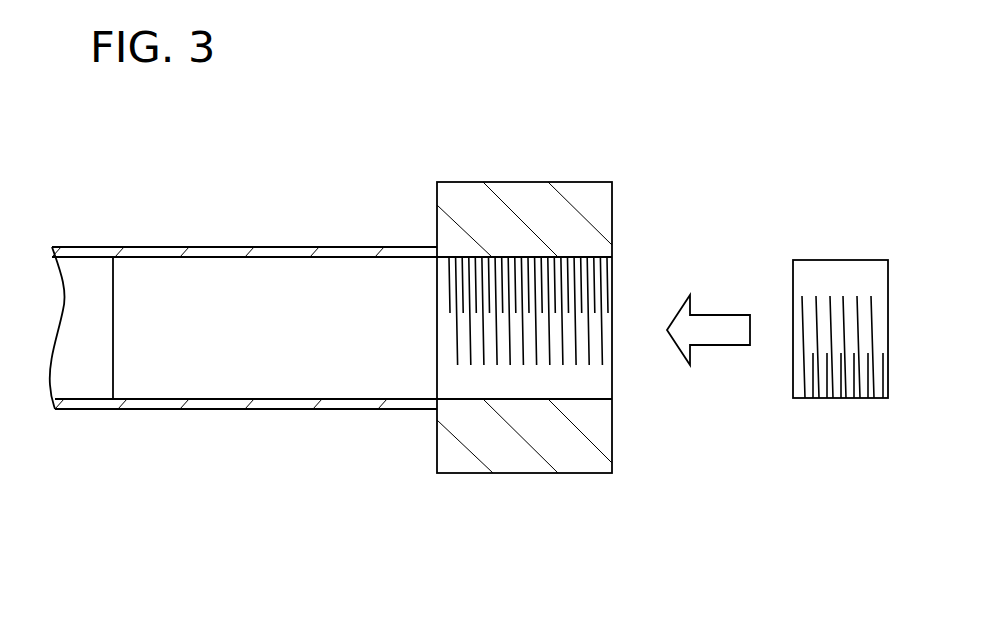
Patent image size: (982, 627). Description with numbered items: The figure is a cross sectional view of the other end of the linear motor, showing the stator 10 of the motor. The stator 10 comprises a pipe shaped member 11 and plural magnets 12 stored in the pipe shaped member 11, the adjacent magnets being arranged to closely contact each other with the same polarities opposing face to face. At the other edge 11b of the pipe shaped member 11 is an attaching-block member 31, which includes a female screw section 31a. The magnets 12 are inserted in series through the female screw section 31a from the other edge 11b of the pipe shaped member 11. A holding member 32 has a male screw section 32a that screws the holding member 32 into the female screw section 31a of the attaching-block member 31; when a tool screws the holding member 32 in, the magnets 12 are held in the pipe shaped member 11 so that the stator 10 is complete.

The stator 10 is at (350, 222).
The pipe shaped member 11 is at (203, 240).
The other edge 11b is at (331, 405).
The magnet 12 is at (190, 377).
The attaching-block member 31 is at (483, 486).
The female screw section 31a is at (592, 387).
The holding member 32 is at (833, 410).
The male screw section 32a is at (829, 268).